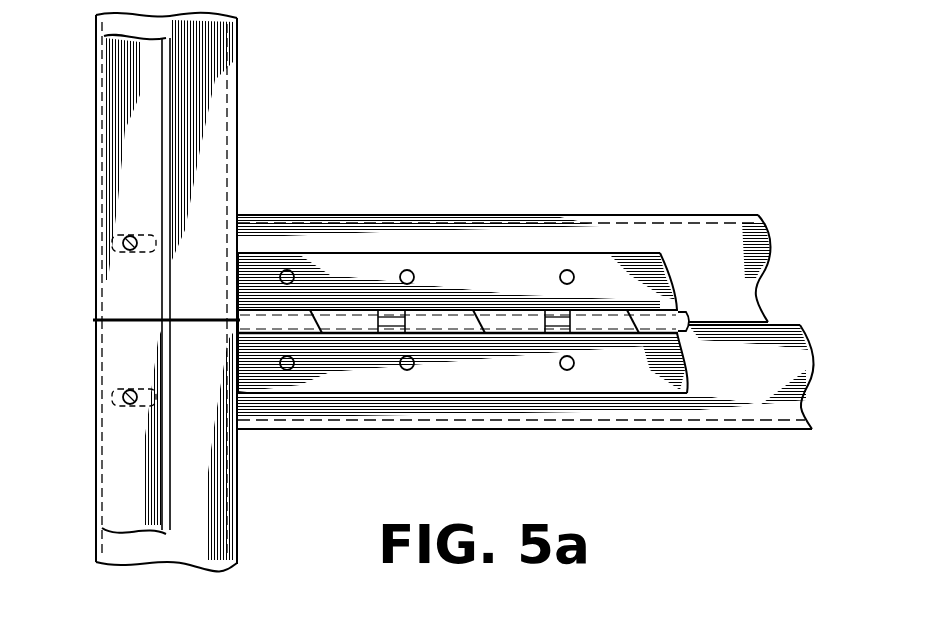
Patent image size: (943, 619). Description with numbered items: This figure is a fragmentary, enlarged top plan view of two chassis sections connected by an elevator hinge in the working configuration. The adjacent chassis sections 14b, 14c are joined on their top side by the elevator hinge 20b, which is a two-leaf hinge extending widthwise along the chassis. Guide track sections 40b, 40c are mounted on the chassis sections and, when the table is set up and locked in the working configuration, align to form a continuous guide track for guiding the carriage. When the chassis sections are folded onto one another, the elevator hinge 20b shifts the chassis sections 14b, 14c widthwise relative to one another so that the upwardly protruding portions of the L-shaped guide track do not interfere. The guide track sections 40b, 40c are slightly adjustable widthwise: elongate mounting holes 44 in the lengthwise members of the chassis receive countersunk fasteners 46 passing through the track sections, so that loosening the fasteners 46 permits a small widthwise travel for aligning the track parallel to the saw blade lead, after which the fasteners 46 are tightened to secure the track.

The second chassis section 14b is at (722, 257).
The third chassis section 14c is at (705, 405).
The elevator hinge 20b is at (520, 270).
The guide track section 40b is at (120, 118).
The guide track section 40c is at (120, 504).
The elongate mounting hole 44 is at (100, 258).
The countersunk fastener 46 is at (130, 238).